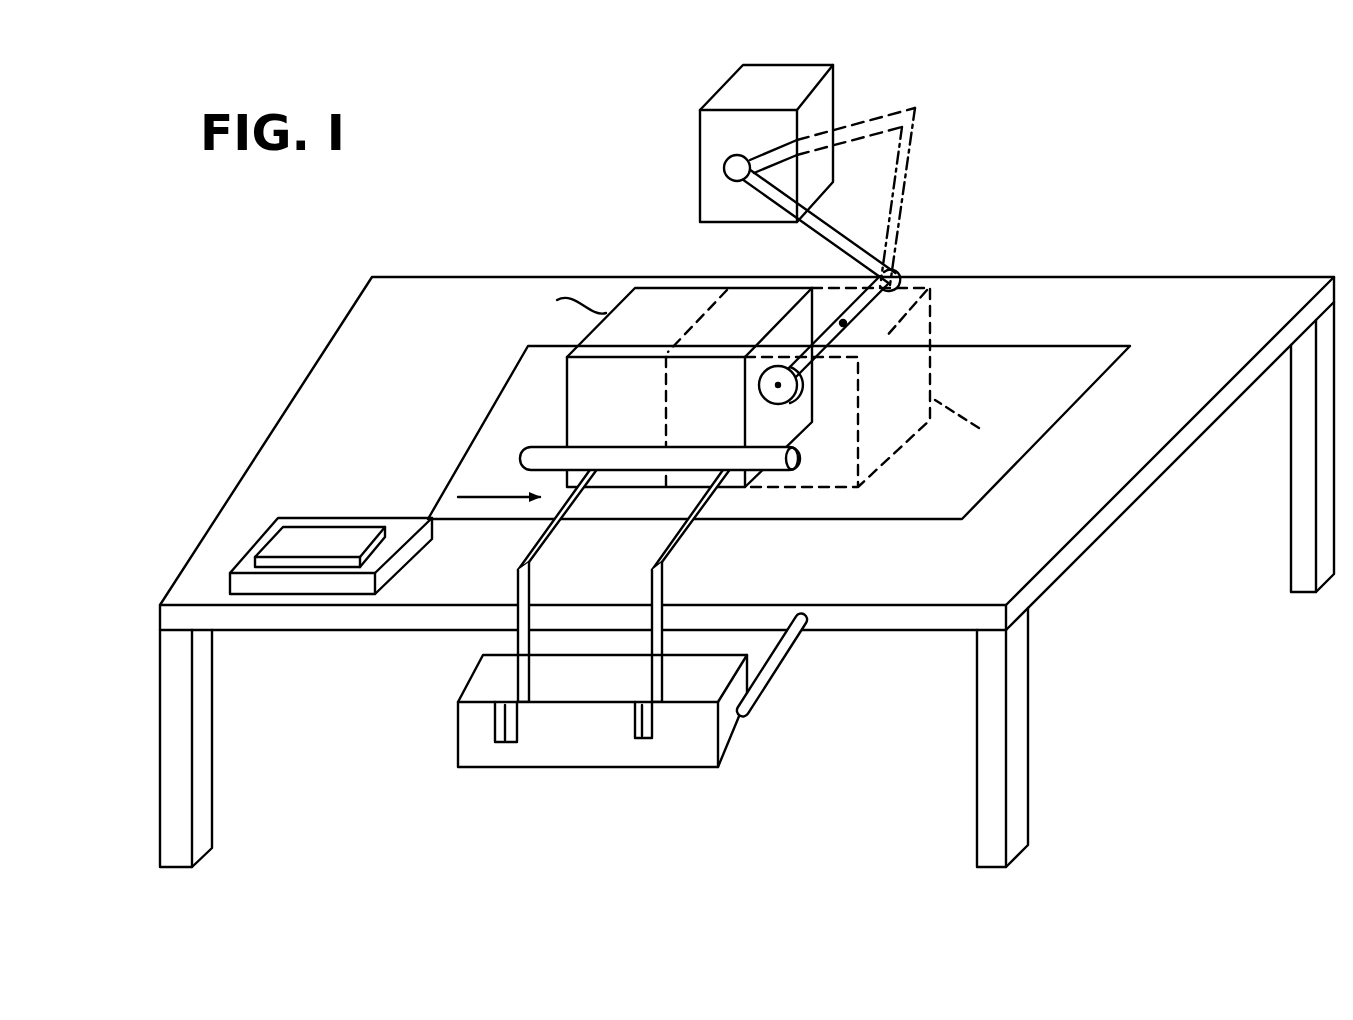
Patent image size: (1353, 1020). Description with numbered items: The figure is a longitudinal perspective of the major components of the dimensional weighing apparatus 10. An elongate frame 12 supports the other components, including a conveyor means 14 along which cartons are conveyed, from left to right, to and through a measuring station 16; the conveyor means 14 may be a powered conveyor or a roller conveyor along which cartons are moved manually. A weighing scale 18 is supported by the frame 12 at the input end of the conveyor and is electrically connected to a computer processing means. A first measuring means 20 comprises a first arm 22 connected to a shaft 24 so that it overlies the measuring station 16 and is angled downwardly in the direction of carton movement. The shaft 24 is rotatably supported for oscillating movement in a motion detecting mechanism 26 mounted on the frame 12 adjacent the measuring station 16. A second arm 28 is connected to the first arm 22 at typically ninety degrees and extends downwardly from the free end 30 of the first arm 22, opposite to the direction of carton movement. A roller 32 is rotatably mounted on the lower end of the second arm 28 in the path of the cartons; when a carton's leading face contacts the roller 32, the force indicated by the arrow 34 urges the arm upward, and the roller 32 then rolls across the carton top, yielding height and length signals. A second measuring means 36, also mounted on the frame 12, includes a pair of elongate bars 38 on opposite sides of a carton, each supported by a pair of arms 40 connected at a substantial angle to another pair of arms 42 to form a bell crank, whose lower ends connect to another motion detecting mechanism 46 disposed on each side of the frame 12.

The dimensional weighing apparatus 10 is at (268, 340).
The elongate frame 12 is at (268, 433).
The conveyor means 14 is at (460, 430).
The measuring station 16 is at (506, 364).
The weighing scale 18 is at (338, 604).
The first measuring means 20 is at (954, 182).
The first arm 22 is at (796, 245).
The shaft 24 is at (725, 178).
The motion detecting mechanism 26 is at (698, 160).
The second arm 28 is at (915, 177).
The free end 30 is at (905, 268).
The roller 32 is at (905, 262).
The force arrow 34 is at (838, 336).
The second measuring means 36 is at (730, 541).
The elongate bars 38 is at (802, 458).
The arms 40 is at (668, 540).
The arms 42 is at (652, 595).
The motion detecting mechanism 46 is at (750, 740).